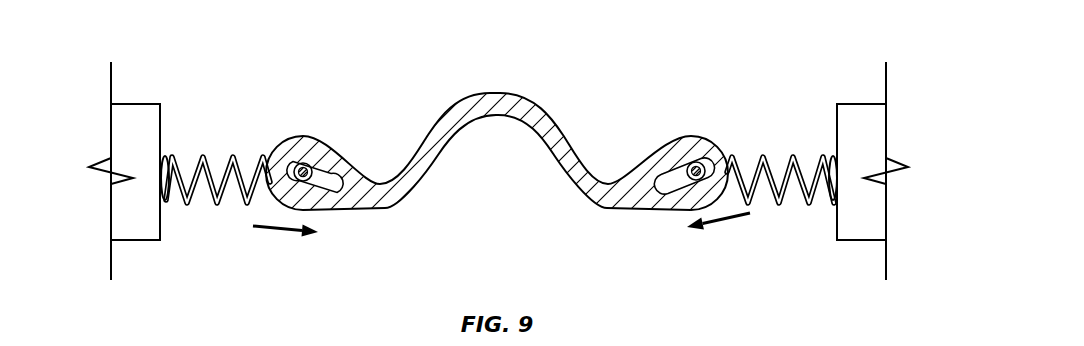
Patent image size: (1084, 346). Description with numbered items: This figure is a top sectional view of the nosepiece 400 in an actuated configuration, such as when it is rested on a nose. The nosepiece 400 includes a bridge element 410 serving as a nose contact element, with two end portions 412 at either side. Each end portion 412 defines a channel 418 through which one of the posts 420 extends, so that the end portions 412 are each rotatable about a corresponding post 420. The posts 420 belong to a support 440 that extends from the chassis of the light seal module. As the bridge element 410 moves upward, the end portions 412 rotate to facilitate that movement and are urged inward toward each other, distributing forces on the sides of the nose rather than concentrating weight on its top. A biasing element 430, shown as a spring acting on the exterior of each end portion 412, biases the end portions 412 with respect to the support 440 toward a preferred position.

The nosepiece 400 is at (78, 74).
The bridge element 410 is at (495, 104).
The end portions 412 is at (353, 210).
The channel 418 is at (328, 191).
The posts 420 is at (307, 169).
The biasing element 430 is at (203, 187).
The support 440 is at (130, 218).